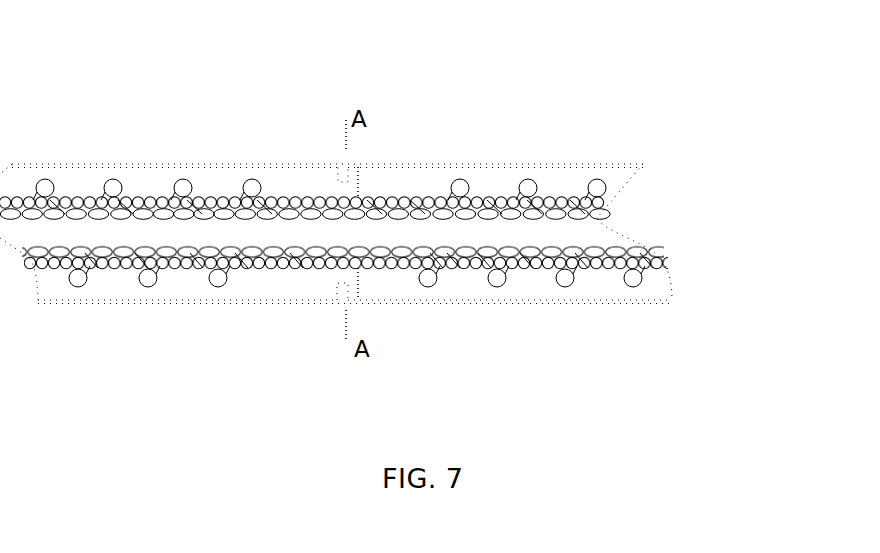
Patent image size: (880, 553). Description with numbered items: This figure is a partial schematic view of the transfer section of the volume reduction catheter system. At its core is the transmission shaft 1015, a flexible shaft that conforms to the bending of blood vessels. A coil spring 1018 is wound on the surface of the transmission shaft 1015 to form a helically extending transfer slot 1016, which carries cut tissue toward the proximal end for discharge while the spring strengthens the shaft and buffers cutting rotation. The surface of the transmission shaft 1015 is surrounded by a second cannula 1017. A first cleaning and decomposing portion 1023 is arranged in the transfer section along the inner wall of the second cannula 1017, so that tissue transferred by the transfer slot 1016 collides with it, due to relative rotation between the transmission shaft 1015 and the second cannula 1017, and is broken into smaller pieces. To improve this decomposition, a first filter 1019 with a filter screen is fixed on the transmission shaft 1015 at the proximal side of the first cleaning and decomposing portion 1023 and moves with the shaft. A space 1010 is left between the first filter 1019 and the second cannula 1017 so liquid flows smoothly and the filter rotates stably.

The space 1010 is at (343, 187).
The transmission shaft 1015 is at (579, 236).
The transfer slot 1016 is at (217, 187).
The second cannula 1017 is at (435, 162).
The coil spring 1018 is at (498, 278).
The first filter 1019 is at (360, 168).
The first cleaning and decomposing portion 1023 is at (335, 295).